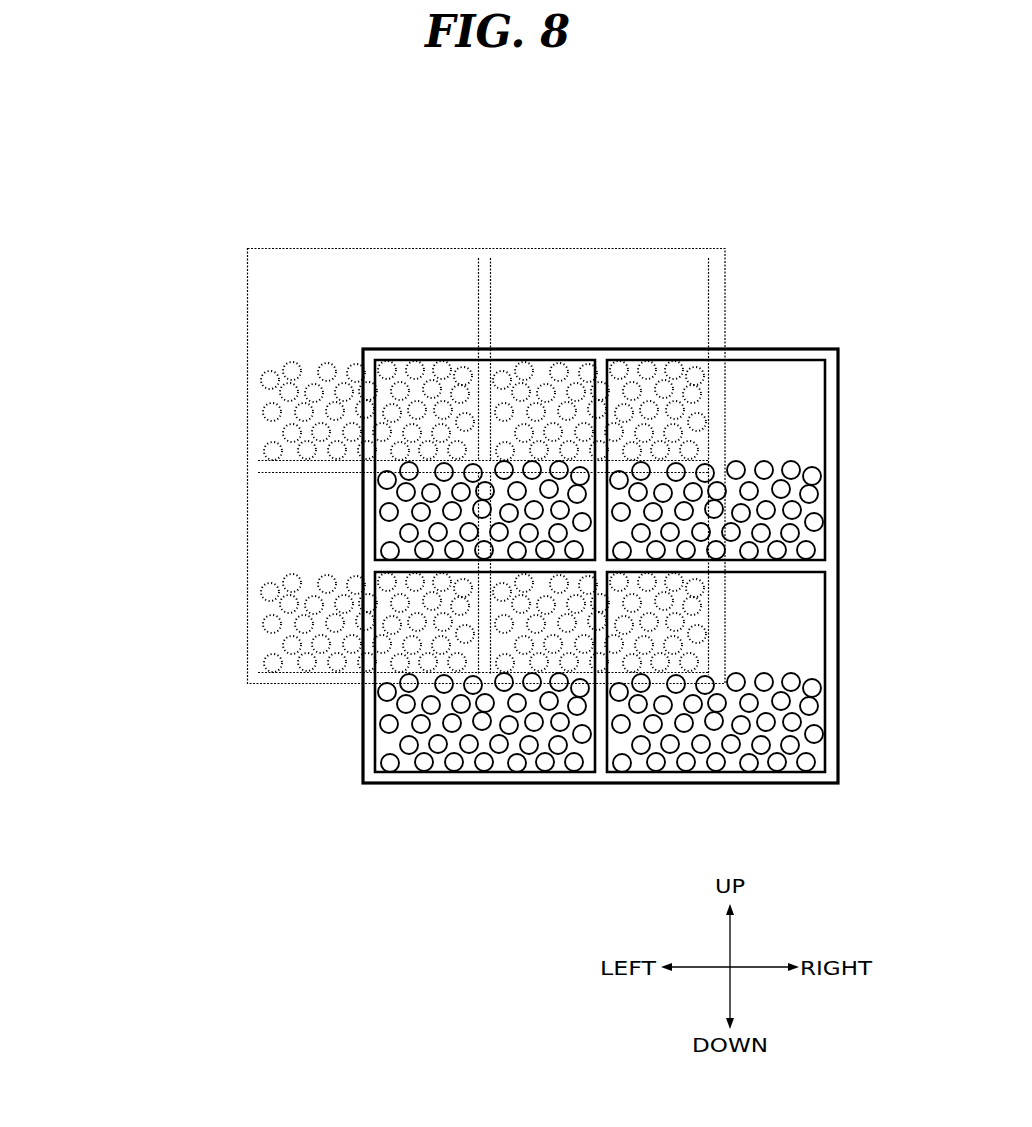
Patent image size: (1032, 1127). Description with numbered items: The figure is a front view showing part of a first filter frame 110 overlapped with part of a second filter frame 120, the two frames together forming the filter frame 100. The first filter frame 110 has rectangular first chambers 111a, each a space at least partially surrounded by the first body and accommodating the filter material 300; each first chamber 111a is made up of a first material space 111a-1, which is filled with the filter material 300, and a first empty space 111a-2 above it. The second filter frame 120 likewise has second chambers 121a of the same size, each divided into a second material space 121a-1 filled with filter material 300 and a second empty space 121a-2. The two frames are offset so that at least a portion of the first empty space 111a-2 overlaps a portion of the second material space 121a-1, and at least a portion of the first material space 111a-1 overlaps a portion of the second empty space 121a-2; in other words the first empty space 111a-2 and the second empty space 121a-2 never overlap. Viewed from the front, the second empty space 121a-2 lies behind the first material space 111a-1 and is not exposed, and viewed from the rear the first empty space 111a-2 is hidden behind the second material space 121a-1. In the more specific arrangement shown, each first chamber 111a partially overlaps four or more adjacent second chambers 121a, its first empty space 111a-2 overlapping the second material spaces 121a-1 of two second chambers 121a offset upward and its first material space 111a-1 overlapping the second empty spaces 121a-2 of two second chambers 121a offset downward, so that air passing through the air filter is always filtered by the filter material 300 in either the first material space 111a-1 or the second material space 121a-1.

The filter frame 100 is at (885, 222).
The first filter frame 110 is at (806, 350).
The second filter frame 120 is at (716, 277).
The first chamber 111a is at (683, 190).
The first material space 111a-1 is at (542, 446).
The first empty space 111a-2 is at (523, 410).
The second chamber 121a is at (118, 392).
The second material space 121a-1 is at (495, 441).
The second empty space 121a-2 is at (362, 315).
The filter material 300 is at (703, 398).